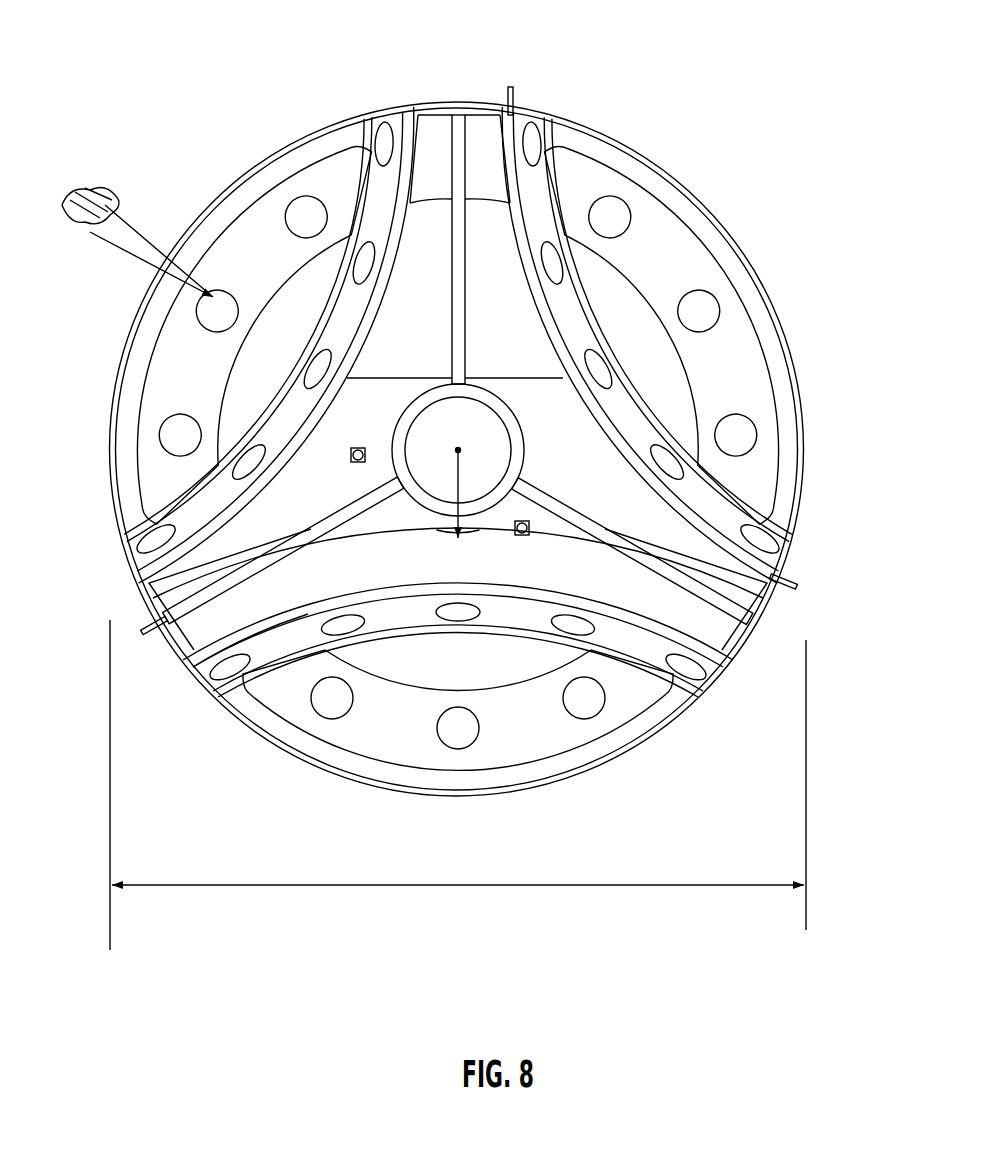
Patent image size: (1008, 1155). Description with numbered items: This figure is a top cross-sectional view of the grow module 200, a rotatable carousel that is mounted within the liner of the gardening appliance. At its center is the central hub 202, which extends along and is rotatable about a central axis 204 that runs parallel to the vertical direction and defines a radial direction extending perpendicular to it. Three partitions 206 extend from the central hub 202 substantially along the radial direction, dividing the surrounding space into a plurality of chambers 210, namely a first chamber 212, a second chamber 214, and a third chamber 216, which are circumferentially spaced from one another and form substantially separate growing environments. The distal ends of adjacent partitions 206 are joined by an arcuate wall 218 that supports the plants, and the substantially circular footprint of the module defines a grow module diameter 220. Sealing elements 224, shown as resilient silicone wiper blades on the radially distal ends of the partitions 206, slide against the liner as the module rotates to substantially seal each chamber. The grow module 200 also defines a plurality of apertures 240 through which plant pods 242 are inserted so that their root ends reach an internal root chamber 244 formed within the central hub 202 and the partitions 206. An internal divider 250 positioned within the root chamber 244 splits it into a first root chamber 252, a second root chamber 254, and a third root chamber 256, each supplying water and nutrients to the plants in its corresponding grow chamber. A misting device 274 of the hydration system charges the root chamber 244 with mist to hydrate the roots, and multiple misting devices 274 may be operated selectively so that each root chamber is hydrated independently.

The grow module 200 is at (824, 97).
The central hub 202 is at (524, 446).
The central axis 204 is at (455, 450).
The partitions 206 is at (667, 633).
The chambers 210 is at (672, 382).
The first chamber 212 is at (639, 322).
The second chamber 214 is at (268, 275).
The third chamber 216 is at (518, 740).
The arcuate wall 218 is at (600, 600).
The grow module diameter 220 is at (200, 886).
The sealing elements 224 is at (517, 96).
The apertures 240 is at (322, 714).
The plant pods 242 is at (95, 226).
The root chamber 244 is at (265, 600).
The internal divider 250 is at (745, 618).
The first root chamber 252 is at (514, 287).
The second root chamber 254 is at (440, 287).
The third root chamber 256 is at (366, 580).
The misting device 274 is at (352, 466).